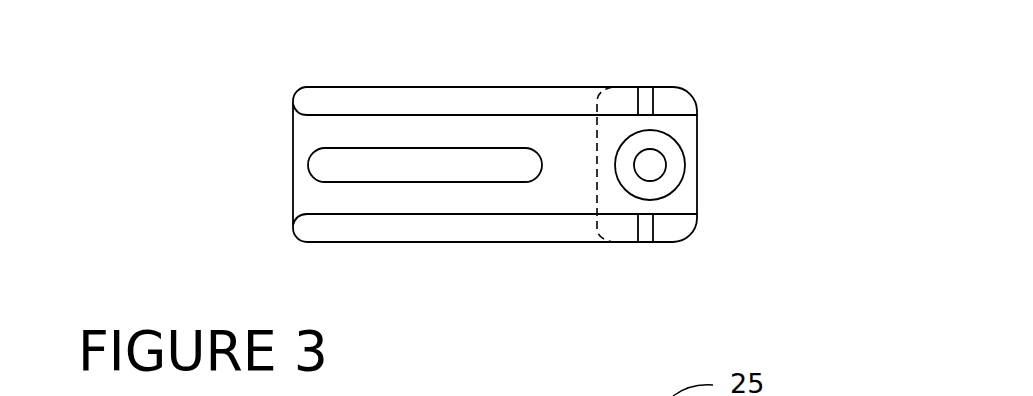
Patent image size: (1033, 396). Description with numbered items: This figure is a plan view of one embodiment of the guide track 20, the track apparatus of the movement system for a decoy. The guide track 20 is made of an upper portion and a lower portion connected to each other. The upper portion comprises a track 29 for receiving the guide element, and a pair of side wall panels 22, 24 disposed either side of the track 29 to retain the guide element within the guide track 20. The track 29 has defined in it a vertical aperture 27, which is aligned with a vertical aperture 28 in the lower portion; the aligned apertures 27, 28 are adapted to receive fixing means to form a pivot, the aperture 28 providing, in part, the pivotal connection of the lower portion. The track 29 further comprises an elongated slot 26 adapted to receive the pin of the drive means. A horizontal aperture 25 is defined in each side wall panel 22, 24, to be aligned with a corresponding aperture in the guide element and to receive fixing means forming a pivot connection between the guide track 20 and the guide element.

The guide track 20 is at (248, 177).
The side wall panel 22 is at (407, 98).
The side wall panel 24 is at (412, 228).
The horizontal aperture 25 is at (648, 98).
The slot 26 is at (362, 167).
The vertical aperture 27 is at (673, 177).
The vertical aperture 28 is at (650, 168).
The track 29 is at (581, 205).